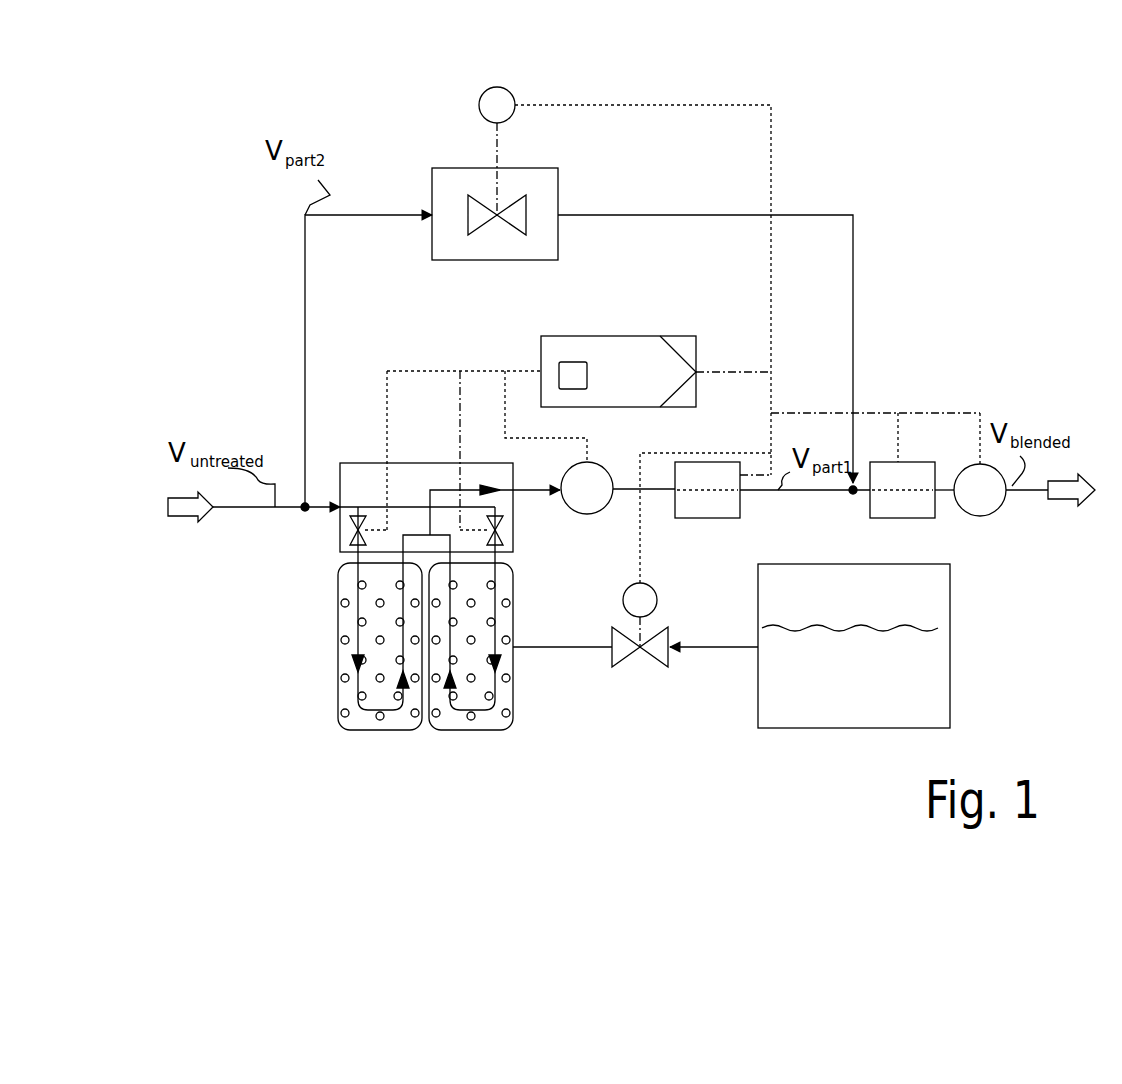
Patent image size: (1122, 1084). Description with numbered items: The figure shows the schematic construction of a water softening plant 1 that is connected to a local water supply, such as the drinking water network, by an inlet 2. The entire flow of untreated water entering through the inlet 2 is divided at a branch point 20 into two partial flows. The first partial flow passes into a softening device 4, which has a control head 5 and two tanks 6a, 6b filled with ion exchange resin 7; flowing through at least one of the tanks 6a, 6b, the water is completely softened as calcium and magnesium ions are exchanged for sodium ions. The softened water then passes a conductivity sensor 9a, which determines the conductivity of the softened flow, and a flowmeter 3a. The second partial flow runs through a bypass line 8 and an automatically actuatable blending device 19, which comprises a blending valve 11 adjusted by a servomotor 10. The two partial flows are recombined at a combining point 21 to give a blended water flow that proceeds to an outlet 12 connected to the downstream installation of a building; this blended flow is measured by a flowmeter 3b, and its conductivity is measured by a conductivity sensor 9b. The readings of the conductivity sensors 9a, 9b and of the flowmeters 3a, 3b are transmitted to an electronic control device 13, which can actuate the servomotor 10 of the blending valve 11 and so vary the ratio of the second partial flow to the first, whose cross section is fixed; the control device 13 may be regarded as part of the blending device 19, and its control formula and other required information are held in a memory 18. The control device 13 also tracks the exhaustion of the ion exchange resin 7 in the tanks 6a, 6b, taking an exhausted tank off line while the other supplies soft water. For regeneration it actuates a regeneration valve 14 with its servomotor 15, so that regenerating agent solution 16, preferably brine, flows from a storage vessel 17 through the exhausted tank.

The water softening plant 1 is at (243, 724).
The inlet 2 is at (228, 510).
The flowmeter 3a is at (707, 520).
The flowmeter 3b is at (890, 520).
The softening device 4 is at (336, 660).
The control head 5 is at (333, 548).
The tank 6a is at (336, 715).
The tank 6b is at (513, 698).
The ion exchange resin 7 is at (513, 608).
The bypass line 8 is at (303, 433).
The conductivity sensor 9a is at (587, 515).
The conductivity sensor 9b is at (980, 518).
The servomotor 10 is at (512, 90).
The blending valve 11 is at (526, 232).
The outlet 12 is at (1040, 494).
The electronic control device 13 is at (700, 345).
The regeneration valve 14 is at (645, 670).
The servomotor 15 is at (658, 598).
The regenerating agent solution 16 is at (935, 655).
The storage vessel 17 is at (950, 705).
The memory 18 is at (572, 362).
The blending device 19 is at (430, 160).
The branch point 20 is at (337, 499).
The combining point 21 is at (846, 506).